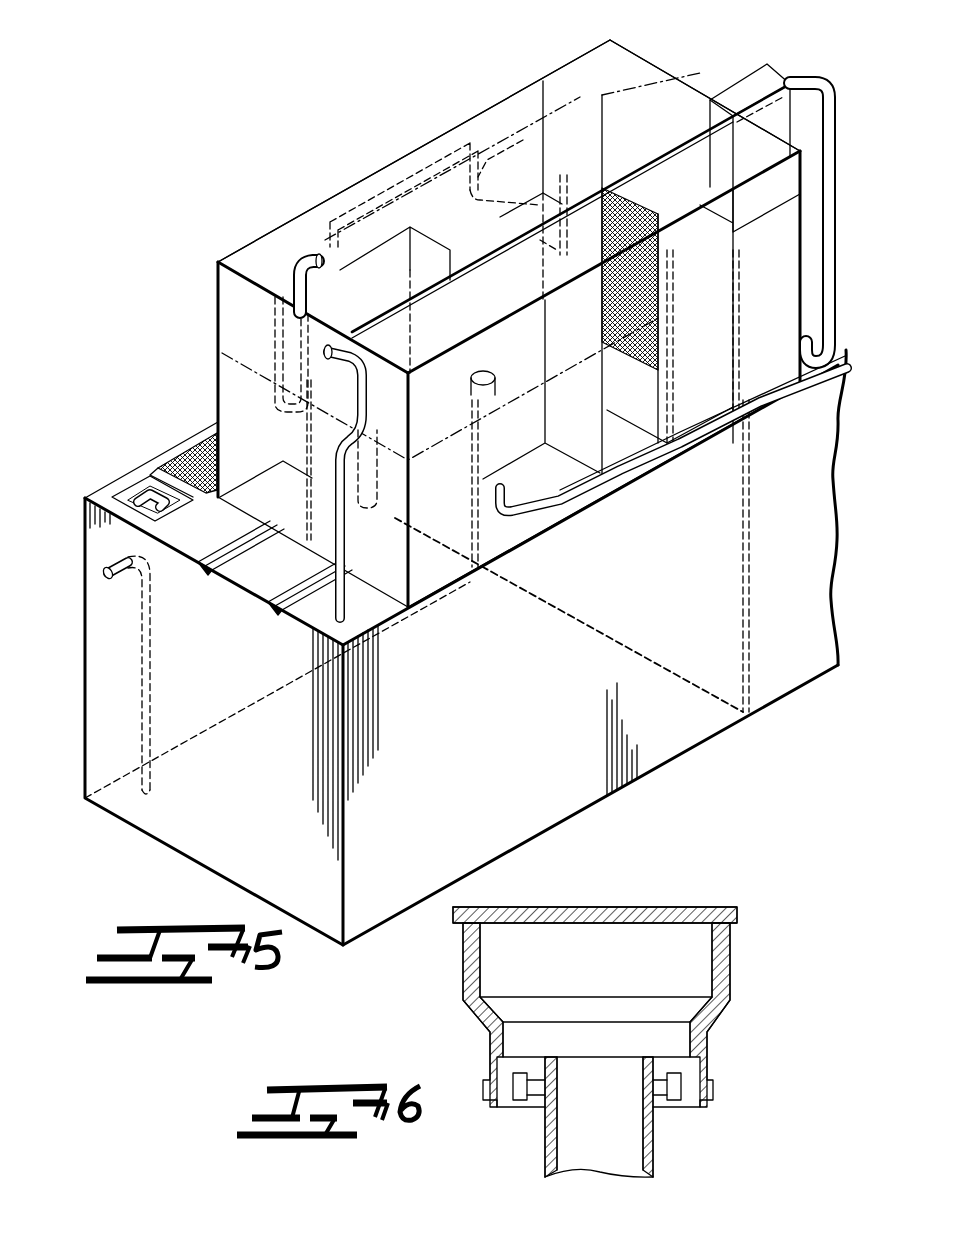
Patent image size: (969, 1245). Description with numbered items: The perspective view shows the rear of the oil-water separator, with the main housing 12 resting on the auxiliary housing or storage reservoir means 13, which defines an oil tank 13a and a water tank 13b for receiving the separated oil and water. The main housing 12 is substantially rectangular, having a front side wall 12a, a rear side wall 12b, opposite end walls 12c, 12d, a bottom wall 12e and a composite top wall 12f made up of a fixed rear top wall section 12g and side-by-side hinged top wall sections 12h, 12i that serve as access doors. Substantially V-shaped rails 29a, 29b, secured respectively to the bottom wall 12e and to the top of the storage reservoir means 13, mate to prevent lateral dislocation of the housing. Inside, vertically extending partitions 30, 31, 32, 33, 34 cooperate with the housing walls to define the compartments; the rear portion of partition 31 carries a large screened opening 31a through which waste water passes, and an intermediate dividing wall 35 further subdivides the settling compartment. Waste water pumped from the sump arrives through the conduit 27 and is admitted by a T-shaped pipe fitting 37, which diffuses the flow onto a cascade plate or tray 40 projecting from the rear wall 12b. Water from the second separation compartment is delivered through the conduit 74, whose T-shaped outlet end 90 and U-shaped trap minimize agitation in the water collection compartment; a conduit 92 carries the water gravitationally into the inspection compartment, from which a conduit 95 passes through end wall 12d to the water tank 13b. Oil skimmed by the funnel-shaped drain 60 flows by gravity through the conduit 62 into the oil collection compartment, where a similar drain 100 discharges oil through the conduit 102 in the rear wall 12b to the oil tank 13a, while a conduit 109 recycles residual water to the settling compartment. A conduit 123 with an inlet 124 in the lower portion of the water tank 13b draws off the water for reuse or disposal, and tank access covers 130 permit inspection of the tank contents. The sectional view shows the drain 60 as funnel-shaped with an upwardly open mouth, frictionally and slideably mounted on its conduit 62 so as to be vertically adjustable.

In FIG. 5, the main separator housing 12 is at (540, 74).
In FIG. 5, the front side wall 12a is at (524, 108).
In FIG. 5, the rear side wall 12b is at (796, 342).
In FIG. 5, the end wall 12c is at (690, 108).
In FIG. 5, the end wall 12d is at (262, 402).
In FIG. 5, the bottom wall 12e is at (430, 572).
In FIG. 5, the composite top wall 12f is at (358, 185).
In FIG. 5, the fixed rear top wall section 12g is at (682, 208).
In FIG. 5, the hinged top wall section 12h is at (630, 62).
In FIG. 5, the hinged top wall section 12i is at (300, 222).
In FIG. 5, the storage reservoir means 13 is at (180, 848).
In FIG. 5, the oil tank 13a is at (777, 657).
In FIG. 5, the water tank 13b is at (553, 783).
In FIG. 5, the conduit 27 is at (831, 76).
In FIG. 5, the V-shaped rail 29a is at (270, 537).
In FIG. 5, the V-shaped rail 29b is at (326, 596).
In FIG. 5, the partition 30 is at (590, 390).
In FIG. 5, the partition 31 is at (660, 358).
In FIG. 5, the screened opening 31a is at (652, 300).
In FIG. 5, the partition 32 is at (525, 140).
In FIG. 5, the partition 33 is at (447, 532).
In FIG. 5, the partition 34 is at (326, 497).
In FIG. 5, the intermediate partition 35 is at (612, 125).
In FIG. 5, the T-shaped pipe fitting 37 is at (752, 172).
In FIG. 5, the cascade plate 40 is at (745, 212).
In FIG. 6, the drain 60 is at (728, 973).
In FIG. 6, the conduit 62 is at (658, 1168).
In FIG. 5, the conduit 74 is at (462, 135).
In FIG. 5, the outlet end 90 is at (268, 297).
In FIG. 5, the conduit 92 is at (372, 340).
In FIG. 5, the conduit 95 is at (312, 627).
In FIG. 5, the drain 100 is at (490, 378).
In FIG. 5, the conduit 102 is at (646, 472).
In FIG. 5, the conduit 109 is at (545, 200).
In FIG. 5, the conduit 123 is at (152, 676).
In FIG. 5, the inlet 124 is at (150, 796).
In FIG. 5, the tank access cover 130 is at (130, 492).